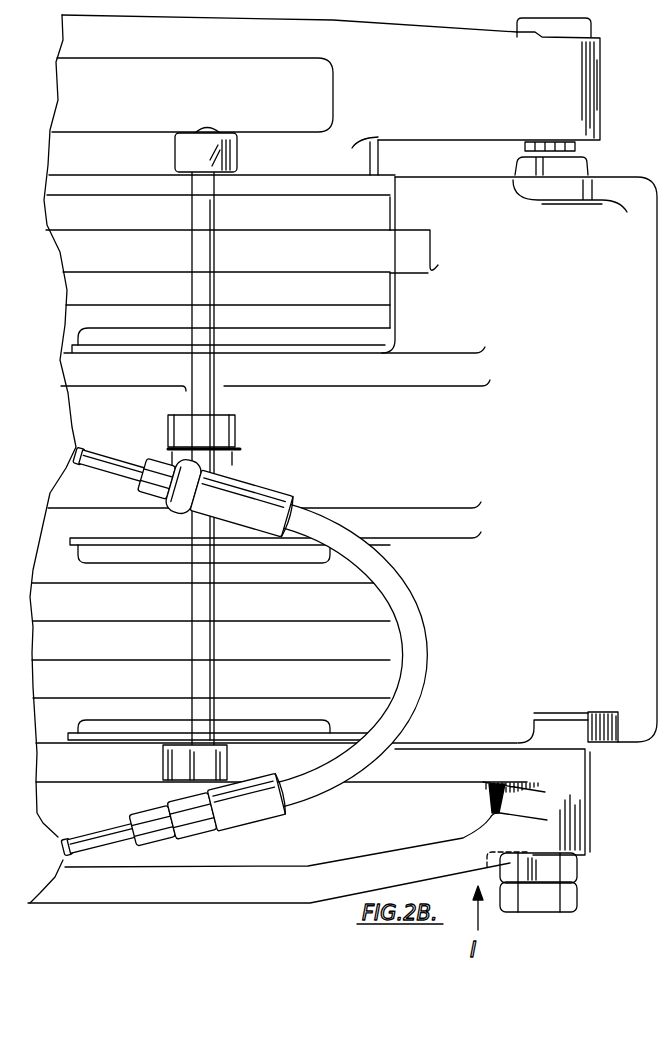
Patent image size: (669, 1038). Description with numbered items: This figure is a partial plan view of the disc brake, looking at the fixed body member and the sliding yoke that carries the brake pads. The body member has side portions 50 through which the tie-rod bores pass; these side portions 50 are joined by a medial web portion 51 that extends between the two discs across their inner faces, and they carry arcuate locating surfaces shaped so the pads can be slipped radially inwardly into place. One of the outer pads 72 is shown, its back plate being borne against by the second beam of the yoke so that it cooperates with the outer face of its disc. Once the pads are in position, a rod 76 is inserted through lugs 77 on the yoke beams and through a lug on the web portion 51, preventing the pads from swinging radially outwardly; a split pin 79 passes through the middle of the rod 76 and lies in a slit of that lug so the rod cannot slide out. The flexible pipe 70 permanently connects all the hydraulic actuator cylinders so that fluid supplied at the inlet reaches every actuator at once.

The side portions 50 is at (657, 366).
The medial web portion 51 is at (124, 421).
The flexible pipe 70 is at (427, 641).
The outer pad 72 is at (149, 217).
The rods 76 is at (214, 215).
The lugs 77 is at (179, 150).
The split pin 79 is at (240, 448).